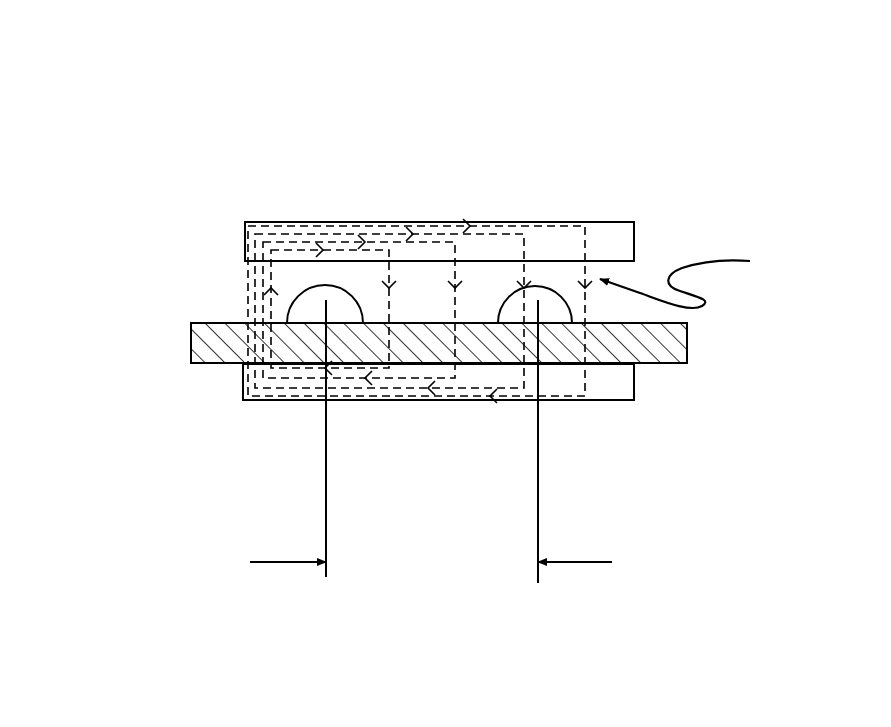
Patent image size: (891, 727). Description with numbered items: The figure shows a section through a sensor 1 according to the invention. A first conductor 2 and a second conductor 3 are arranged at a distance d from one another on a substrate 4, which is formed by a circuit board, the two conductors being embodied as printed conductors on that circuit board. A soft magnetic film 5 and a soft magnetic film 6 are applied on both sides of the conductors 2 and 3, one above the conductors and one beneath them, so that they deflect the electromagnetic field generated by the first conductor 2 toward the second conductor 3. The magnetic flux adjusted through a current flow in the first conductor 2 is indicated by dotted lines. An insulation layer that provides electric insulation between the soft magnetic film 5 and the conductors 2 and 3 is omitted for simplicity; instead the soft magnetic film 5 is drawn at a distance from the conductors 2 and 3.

The sensor 1 is at (712, 125).
The first conductor 2 is at (325, 300).
The second conductor 3 is at (542, 302).
The substrate 4 is at (190, 347).
The soft magnetic film 5 is at (241, 235).
The soft magnetic film 6 is at (243, 383).